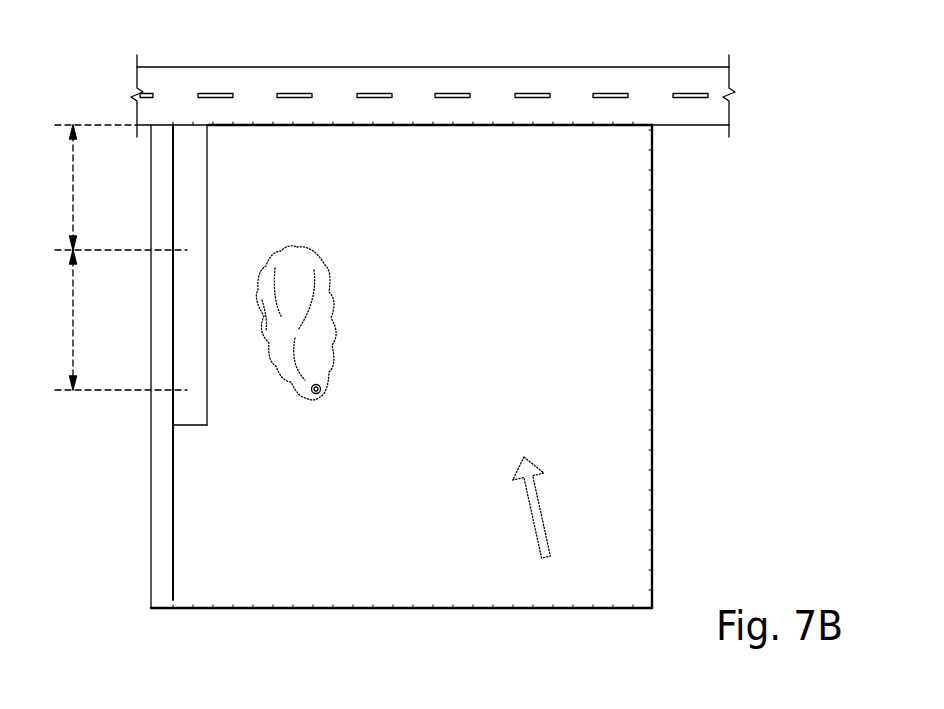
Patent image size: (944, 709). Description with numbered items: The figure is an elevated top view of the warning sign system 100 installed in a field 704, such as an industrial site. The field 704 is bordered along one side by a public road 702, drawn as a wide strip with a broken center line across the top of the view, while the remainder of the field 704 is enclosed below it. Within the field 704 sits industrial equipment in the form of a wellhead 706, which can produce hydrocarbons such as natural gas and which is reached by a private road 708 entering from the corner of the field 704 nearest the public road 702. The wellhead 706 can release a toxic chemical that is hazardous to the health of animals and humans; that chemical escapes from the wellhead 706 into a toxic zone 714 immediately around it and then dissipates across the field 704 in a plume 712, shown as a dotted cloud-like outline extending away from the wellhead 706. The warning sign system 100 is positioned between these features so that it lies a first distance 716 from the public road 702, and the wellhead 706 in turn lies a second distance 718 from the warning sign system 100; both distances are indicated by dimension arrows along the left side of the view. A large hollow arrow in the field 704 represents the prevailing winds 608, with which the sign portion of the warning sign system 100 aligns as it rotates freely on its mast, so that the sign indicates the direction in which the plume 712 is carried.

The public road 702 is at (450, 66).
The field 704 is at (616, 346).
The private road 708 is at (197, 404).
The first distance 716 is at (117, 187).
The second distance 718 is at (117, 320).
The warning sign system 100 is at (243, 248).
The plume 712 is at (333, 328).
The toxic zone 714 is at (319, 390).
The wellhead 706 is at (320, 393).
The prevailing winds 608 is at (545, 502).